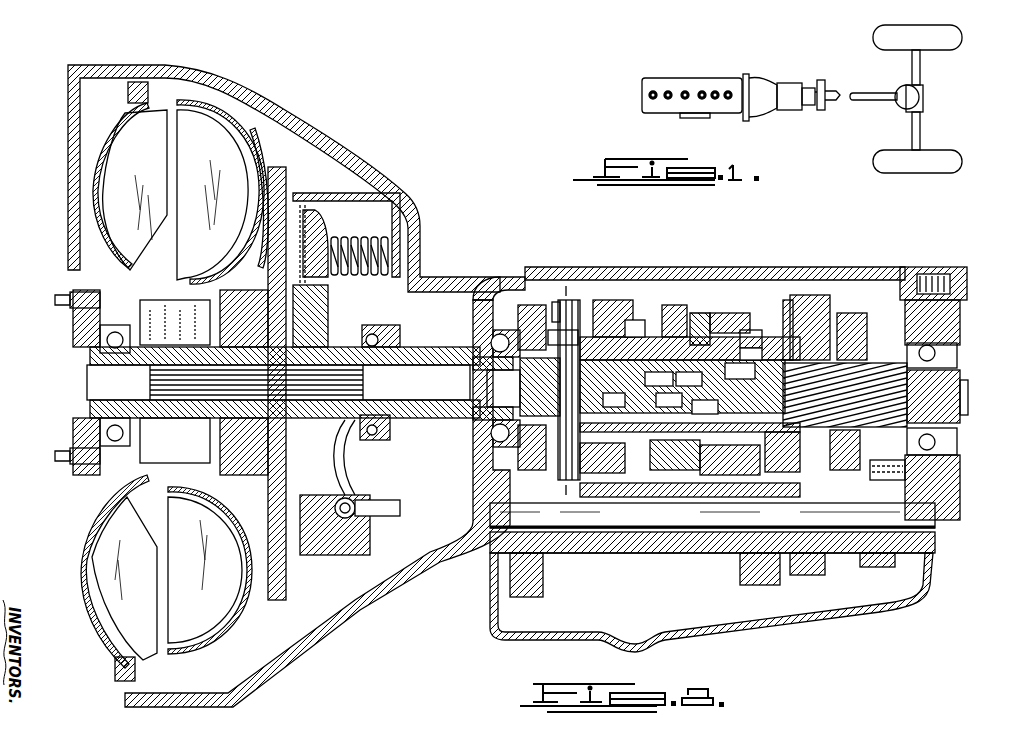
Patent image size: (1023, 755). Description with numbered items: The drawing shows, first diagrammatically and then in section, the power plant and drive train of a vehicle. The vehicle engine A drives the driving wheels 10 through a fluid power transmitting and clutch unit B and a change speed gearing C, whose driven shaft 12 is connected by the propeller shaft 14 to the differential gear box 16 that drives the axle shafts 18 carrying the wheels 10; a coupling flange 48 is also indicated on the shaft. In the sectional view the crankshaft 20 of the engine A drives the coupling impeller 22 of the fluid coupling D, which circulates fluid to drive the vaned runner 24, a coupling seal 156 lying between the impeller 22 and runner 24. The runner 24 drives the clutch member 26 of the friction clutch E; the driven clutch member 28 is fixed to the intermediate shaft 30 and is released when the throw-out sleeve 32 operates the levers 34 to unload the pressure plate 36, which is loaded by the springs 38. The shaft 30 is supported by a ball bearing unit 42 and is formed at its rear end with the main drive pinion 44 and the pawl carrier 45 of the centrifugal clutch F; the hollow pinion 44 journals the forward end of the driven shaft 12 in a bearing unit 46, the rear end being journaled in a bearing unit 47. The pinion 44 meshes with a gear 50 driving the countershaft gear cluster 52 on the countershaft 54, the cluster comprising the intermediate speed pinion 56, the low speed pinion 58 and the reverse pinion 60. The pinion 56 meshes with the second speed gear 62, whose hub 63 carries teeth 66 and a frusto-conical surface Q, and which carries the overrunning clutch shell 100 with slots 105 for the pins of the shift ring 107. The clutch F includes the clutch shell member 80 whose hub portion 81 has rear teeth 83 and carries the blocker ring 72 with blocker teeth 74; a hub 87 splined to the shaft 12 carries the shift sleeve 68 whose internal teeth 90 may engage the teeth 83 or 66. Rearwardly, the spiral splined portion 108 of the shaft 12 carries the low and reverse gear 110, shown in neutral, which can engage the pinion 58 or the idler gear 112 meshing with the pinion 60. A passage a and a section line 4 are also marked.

In FIG. 1, the driving wheels 10 is at (950, 28).
In FIG. 1, the driven shaft 12 is at (802, 110).
In FIG. 2, the driven shaft 12 is at (859, 396).
In FIG. 1, the propeller shaft 14 is at (864, 98).
In FIG. 1, the differential gear box 16 is at (925, 94).
In FIG. 1, the axle shafts 18 is at (921, 62).
In FIG. 1, the coupling flange 48 is at (828, 82).
In FIG. 1, the vehicle engine A is at (686, 78).
In FIG. 1, the fluid power transmitting and clutch unit B is at (768, 76).
In FIG. 2, the fluid power transmitting and clutch unit B is at (300, 128).
In FIG. 1, the change speed gearing C is at (794, 84).
In FIG. 2, the change speed gearing C is at (842, 268).
In FIG. 2, the fluid coupling D is at (268, 165).
In FIG. 2, the friction clutch E is at (312, 192).
In FIG. 2, the centrifugal clutch F is at (552, 302).
In FIG. 2, the frusto-conically shaped surface Q is at (682, 386).
In FIG. 2, the passage a is at (635, 328).
In FIG. 2, the section line 4 is at (568, 288).
In FIG. 2, the crankshaft 20 is at (75, 340).
In FIG. 2, the coupling impeller 22 is at (142, 163).
In FIG. 2, the vaned runner 24 is at (222, 163).
In FIG. 2, the clutch member 26 is at (286, 598).
In FIG. 2, the driven clutch member 28 is at (310, 300).
In FIG. 2, the intermediate shaft 30 is at (412, 382).
In FIG. 2, the throw-out sleeve 32 is at (400, 438).
In FIG. 2, the levers 34 is at (362, 470).
In FIG. 2, the driving pressure plate 36 is at (326, 222).
In FIG. 2, the springs 38 is at (395, 238).
In FIG. 2, the ball bearing unit 42 is at (442, 292).
In FIG. 2, the main drive pinion 44 is at (532, 384).
In FIG. 2, the pawl carrier 45 is at (556, 335).
In FIG. 2, the bearing unit 46 is at (522, 388).
In FIG. 2, the bearing unit 47 is at (950, 350).
In FIG. 2, the gear 50 is at (545, 595).
In FIG. 2, the countershaft gear cluster 52 is at (630, 556).
In FIG. 2, the countershaft 54 is at (660, 521).
In FIG. 2, the intermediate speed pinion 56 is at (768, 587).
In FIG. 2, the low speed pinion 58 is at (814, 576).
In FIG. 2, the reverse pinion 60 is at (878, 568).
In FIG. 2, the second speed gear 62 is at (790, 332).
In FIG. 2, the hub 63 is at (750, 353).
In FIG. 2, the teeth 66 is at (740, 371).
In FIG. 2, the shift sleeve 68 is at (751, 335).
In FIG. 2, the synchronizing and blocker ring 72 is at (669, 401).
In FIG. 2, the clutch blocker teeth 74 is at (672, 306).
In FIG. 2, the clutch shell member 80 is at (582, 305).
In FIG. 2, the hub portion 81 is at (614, 401).
In FIG. 2, the teeth 83 is at (659, 380).
In FIG. 2, the hub 87 is at (689, 380).
In FIG. 2, the internal teeth 90 is at (705, 407).
In FIG. 2, the overrunning clutch shell 100 is at (728, 313).
In FIG. 2, the slots 105 is at (625, 312).
In FIG. 2, the shift ring 107 is at (716, 302).
In FIG. 2, the spiral splined portion 108 is at (680, 320).
In FIG. 2, the low and reverse gear 110 is at (860, 316).
In FIG. 2, the idler gear 112 is at (874, 462).
In FIG. 2, the coupling seal 156 is at (178, 318).